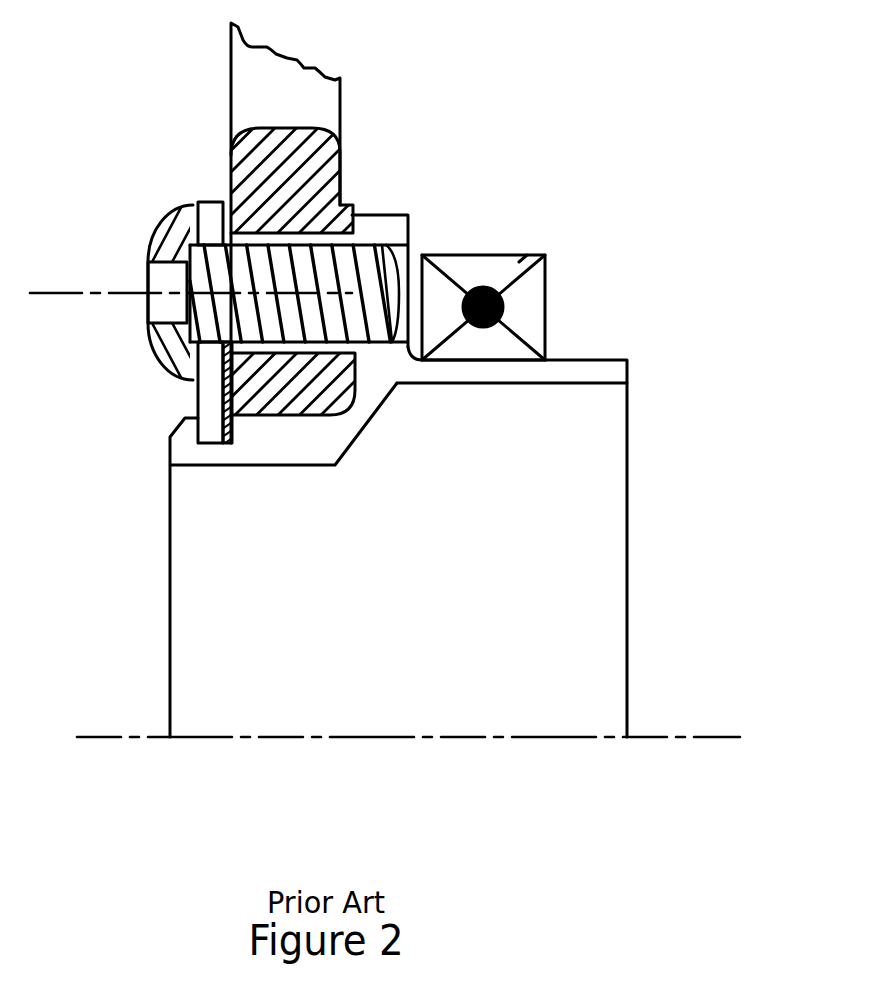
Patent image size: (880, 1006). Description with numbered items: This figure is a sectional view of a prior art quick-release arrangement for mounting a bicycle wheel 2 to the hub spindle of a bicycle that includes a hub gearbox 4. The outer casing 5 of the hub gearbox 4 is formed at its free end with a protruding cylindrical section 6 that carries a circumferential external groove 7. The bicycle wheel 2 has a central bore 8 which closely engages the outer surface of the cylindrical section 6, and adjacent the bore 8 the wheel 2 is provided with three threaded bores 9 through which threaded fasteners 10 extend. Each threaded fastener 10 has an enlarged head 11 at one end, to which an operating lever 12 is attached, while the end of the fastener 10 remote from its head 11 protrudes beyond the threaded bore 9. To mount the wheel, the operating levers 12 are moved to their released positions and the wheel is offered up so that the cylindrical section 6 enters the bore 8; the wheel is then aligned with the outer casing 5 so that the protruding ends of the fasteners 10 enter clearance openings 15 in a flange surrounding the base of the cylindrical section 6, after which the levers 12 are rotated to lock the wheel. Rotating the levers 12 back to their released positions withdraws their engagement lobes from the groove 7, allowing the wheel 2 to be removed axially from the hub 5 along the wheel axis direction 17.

The bicycle wheel 2 is at (246, 88).
The hub gearbox 4 is at (628, 408).
The outer casing 5 is at (627, 513).
The protruding cylindrical section 6 is at (274, 449).
The circumferential external groove 7 is at (230, 445).
The central bore 8 is at (319, 430).
The threaded bores 9 is at (290, 222).
The threaded fasteners 10 is at (355, 262).
The enlarged head 11 is at (173, 364).
The operating lever 12 is at (200, 409).
The clearance openings 15 is at (404, 362).
The wheel axis direction 17 is at (717, 737).